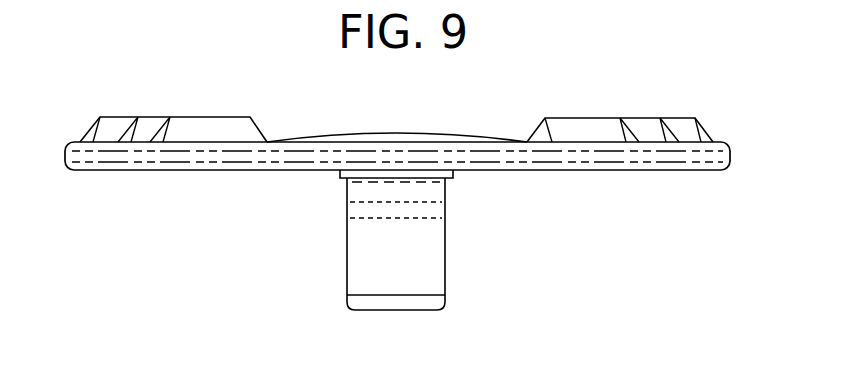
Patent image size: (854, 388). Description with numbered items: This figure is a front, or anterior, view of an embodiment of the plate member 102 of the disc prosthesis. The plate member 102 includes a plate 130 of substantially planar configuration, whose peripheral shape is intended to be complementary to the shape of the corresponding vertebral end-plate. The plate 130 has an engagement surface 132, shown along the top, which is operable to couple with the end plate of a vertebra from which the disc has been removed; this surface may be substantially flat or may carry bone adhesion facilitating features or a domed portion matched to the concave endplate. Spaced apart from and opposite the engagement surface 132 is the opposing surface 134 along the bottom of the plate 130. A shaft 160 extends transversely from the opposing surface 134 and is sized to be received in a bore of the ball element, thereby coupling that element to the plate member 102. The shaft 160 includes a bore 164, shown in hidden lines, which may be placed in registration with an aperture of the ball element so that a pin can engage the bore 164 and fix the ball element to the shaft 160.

The plate member 102 is at (271, 256).
The plate 130 is at (197, 158).
The engagement surface 132 is at (551, 141).
The opposing surface 134 is at (605, 175).
The shaft 160 is at (438, 263).
The bore 164 is at (443, 210).